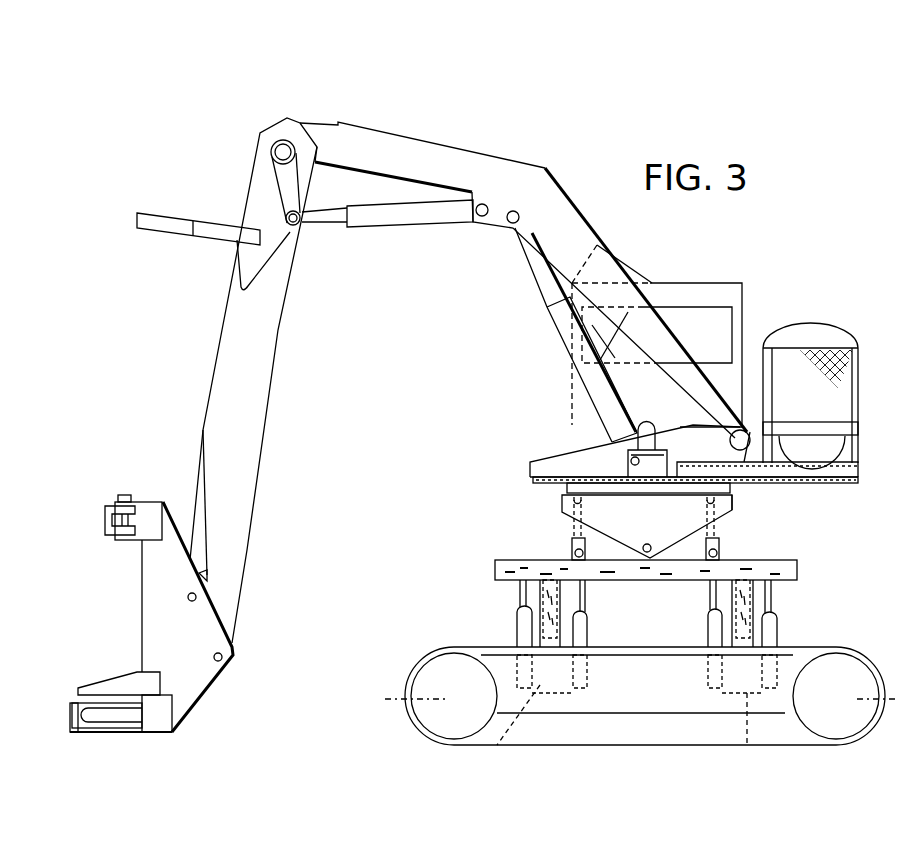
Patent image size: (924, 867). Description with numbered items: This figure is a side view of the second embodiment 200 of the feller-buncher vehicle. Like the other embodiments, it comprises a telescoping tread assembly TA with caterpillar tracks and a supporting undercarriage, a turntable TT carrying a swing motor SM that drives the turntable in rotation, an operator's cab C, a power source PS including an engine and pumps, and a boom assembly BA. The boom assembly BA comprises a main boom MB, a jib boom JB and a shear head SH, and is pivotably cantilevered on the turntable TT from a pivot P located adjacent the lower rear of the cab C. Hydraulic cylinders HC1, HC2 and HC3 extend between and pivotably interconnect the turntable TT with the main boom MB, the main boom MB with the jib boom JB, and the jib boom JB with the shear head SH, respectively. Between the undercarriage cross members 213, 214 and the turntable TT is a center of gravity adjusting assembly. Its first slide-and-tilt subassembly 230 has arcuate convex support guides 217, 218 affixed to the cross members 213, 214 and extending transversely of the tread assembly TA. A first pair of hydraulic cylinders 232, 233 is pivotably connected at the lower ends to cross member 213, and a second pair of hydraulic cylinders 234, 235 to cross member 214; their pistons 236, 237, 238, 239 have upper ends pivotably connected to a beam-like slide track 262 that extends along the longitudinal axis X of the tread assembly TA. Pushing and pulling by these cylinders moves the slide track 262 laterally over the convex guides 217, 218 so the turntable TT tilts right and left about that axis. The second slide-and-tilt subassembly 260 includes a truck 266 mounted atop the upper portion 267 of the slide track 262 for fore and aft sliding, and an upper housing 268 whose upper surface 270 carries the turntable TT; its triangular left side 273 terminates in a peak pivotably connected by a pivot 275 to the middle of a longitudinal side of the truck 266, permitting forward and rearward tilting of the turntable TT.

The second embodiment of the mobile land vehicle 200 is at (537, 122).
The boom assembly BA is at (266, 108).
The main boom MB is at (420, 157).
The jib boom JB is at (243, 316).
The hydraulic cylinder HC1 is at (603, 383).
The hydraulic cylinder HC2 is at (387, 215).
The hydraulic cylinder HC3 is at (197, 510).
The operator's cab C is at (721, 292).
The power source PS is at (826, 334).
The pivot P is at (742, 438).
The swing motor SM is at (694, 451).
The turntable TT is at (558, 489).
The shear head SH is at (185, 680).
The second slide-and-tilt subassembly 260 is at (472, 542).
The upper surface 270 is at (735, 488).
The upper housing or table 268 is at (738, 499).
The left side 273 is at (617, 510).
The pivot 275 is at (630, 548).
The truck 266 is at (719, 548).
The upper portion 267 is at (796, 560).
The slide track 262 is at (798, 568).
The first slide-and-tilt subassembly 230 is at (415, 618).
The piston 236 is at (519, 588).
The hydraulic cylinder 232 is at (516, 627).
The piston 237 is at (586, 597).
The hydraulic cylinder 233 is at (588, 630).
The piston 238 is at (709, 592).
The hydraulic cylinder 234 is at (707, 625).
The piston 239 is at (772, 595).
The hydraulic cylinder 235 is at (778, 628).
The convex support guide 217 is at (552, 628).
The convex support guide 218 is at (743, 622).
The cross member 213 is at (494, 745).
The cross member 214 is at (810, 711).
The telescoping tread assembly TA is at (655, 757).
The longitudinal axis X-X' X is at (645, 700).